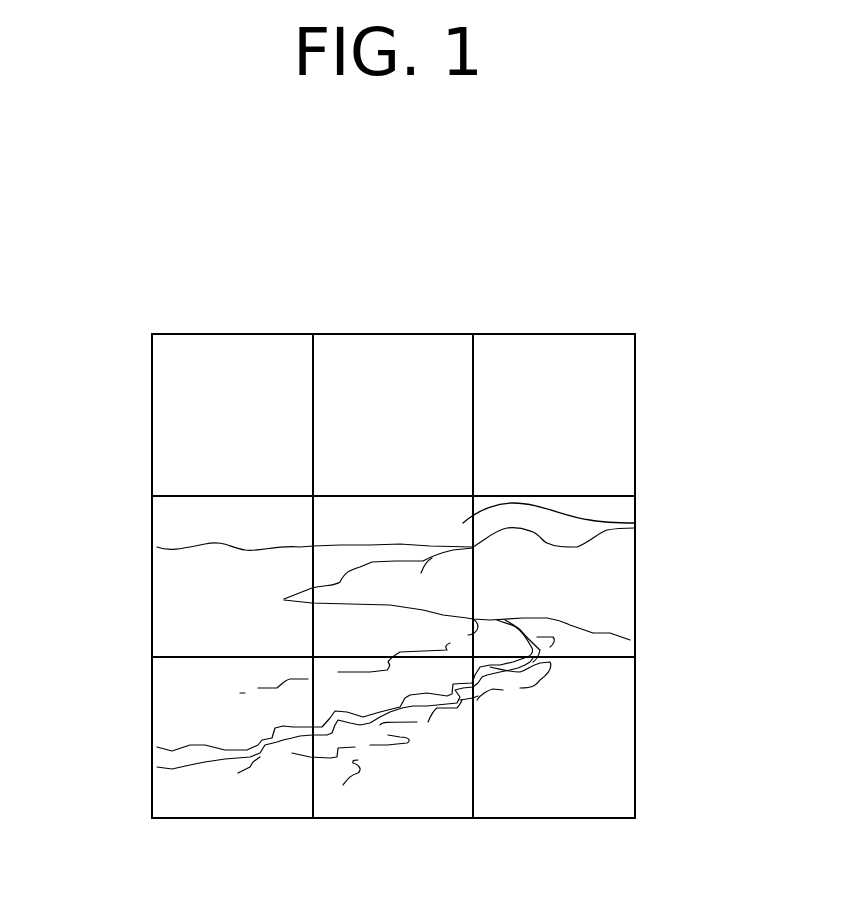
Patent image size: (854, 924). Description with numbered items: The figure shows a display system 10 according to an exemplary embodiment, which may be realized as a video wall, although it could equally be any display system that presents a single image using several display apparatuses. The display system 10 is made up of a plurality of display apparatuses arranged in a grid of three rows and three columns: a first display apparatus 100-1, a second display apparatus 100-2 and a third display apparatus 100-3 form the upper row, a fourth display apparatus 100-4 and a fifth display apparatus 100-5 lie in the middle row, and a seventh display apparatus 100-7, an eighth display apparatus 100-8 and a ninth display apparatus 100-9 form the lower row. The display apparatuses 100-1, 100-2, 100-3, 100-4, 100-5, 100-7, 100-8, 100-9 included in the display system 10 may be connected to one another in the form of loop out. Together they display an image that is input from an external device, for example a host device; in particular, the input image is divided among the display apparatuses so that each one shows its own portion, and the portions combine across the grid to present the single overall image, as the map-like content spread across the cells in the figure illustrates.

The display system 10 is at (357, 213).
The display apparatus 100-1 is at (230, 333).
The display apparatus 100-2 is at (392, 333).
The display apparatus 100-3 is at (553, 333).
The display apparatus 100-4 is at (152, 577).
The display apparatus 100-5 is at (635, 523).
The display apparatus 100-7 is at (230, 819).
The display apparatus 100-8 is at (390, 819).
The display apparatus 100-9 is at (550, 819).